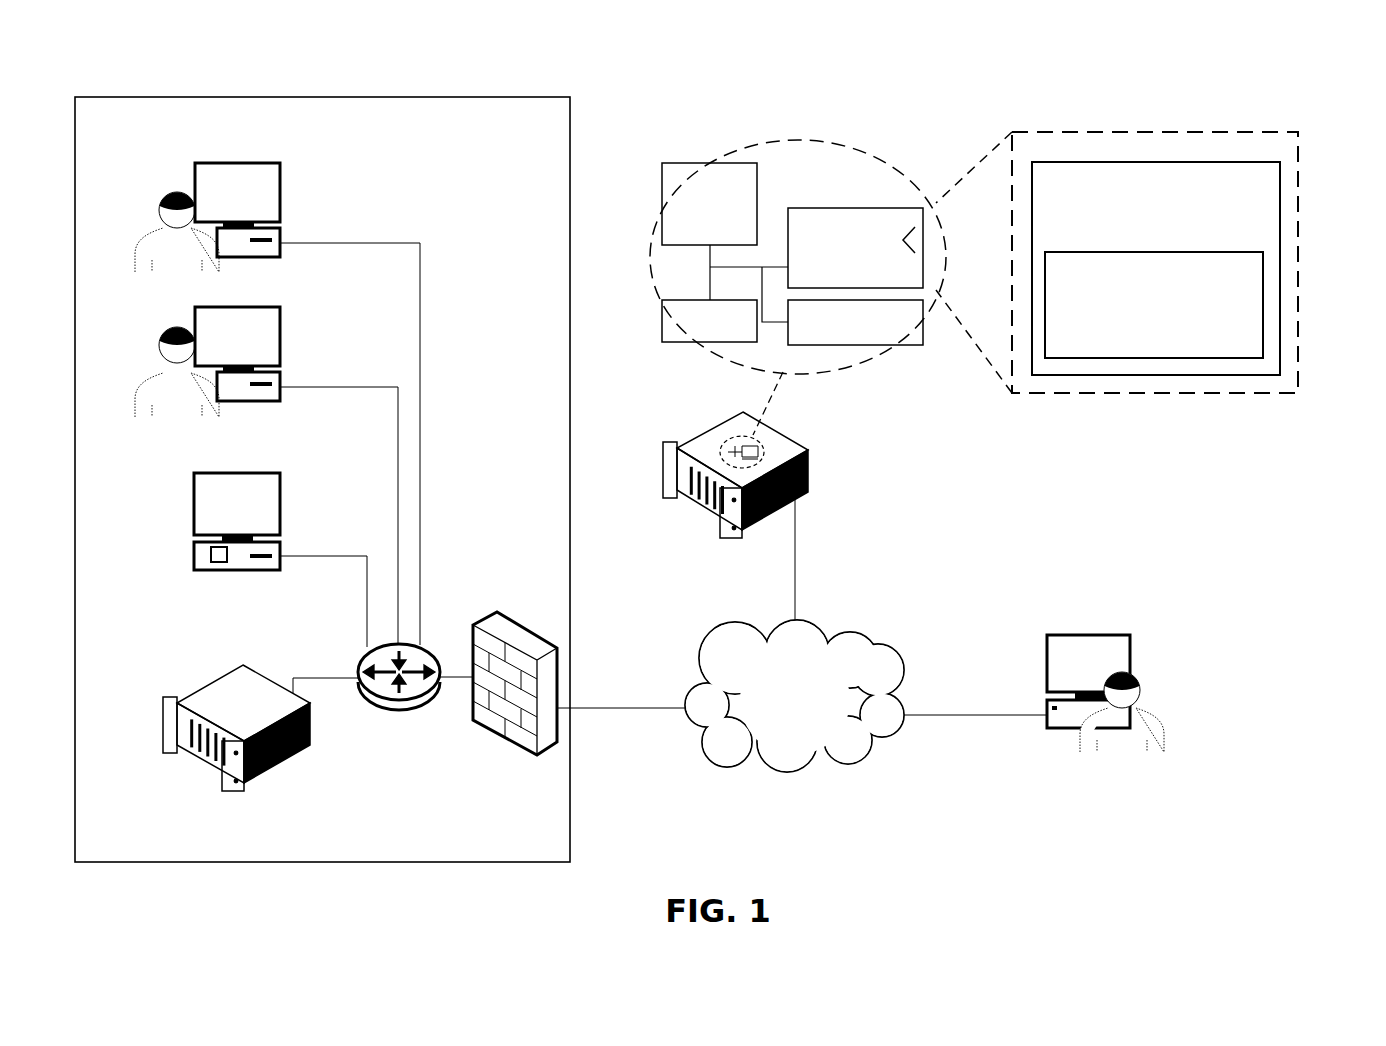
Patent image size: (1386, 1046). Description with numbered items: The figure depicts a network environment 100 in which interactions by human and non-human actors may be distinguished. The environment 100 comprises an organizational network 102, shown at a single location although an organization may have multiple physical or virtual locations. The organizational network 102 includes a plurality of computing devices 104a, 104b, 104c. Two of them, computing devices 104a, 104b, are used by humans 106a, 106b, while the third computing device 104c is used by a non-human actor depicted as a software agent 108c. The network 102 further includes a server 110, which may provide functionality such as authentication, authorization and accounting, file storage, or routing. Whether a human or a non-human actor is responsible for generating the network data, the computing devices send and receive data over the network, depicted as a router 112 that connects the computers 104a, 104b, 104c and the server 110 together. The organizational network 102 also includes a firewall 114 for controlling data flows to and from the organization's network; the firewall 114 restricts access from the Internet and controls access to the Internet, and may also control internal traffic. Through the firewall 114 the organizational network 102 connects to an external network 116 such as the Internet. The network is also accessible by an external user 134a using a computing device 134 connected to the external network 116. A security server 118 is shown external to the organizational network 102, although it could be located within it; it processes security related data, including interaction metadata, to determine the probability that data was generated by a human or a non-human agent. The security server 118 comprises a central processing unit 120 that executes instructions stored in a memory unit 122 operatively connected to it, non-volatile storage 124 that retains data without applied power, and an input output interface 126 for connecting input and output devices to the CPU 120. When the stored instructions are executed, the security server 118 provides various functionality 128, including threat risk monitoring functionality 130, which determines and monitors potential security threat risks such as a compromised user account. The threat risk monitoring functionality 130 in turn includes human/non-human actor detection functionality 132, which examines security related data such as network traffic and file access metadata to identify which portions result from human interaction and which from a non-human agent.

The environment 100 is at (746, 26).
The organizational network 102 is at (517, 97).
The computing device 104a is at (195, 176).
The computing device 104b is at (195, 320).
The computing device 104c is at (194, 503).
The human 106a is at (160, 233).
The human 106b is at (160, 377).
The software agent 108c is at (211, 553).
The server 110 is at (287, 757).
The router 112 is at (400, 713).
The firewall 114 is at (500, 612).
The external network 116 is at (768, 709).
The security server 118 is at (808, 470).
The central processing unit 120 is at (735, 163).
The memory unit 122 is at (822, 208).
The non-volatile storage 124 is at (855, 345).
The input output interface 126 is at (668, 311).
The functionality 128 is at (1062, 132).
The threat risk monitoring functionality 130 is at (1282, 200).
The human/non-human actor detection functionality 132 is at (1263, 330).
The computing device 134 is at (1132, 642).
The external user 134a is at (1162, 746).